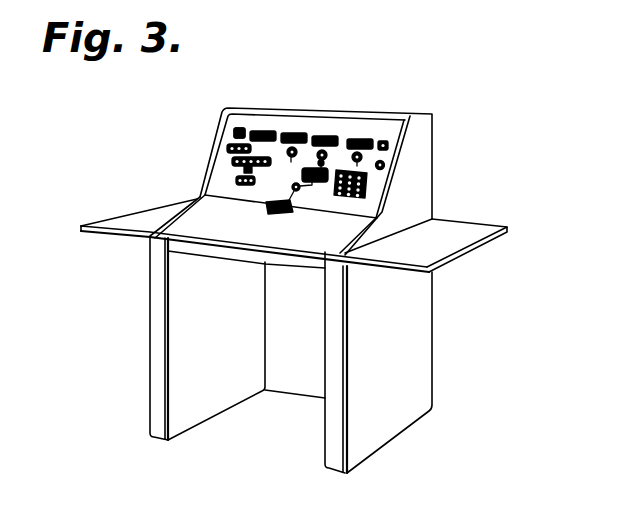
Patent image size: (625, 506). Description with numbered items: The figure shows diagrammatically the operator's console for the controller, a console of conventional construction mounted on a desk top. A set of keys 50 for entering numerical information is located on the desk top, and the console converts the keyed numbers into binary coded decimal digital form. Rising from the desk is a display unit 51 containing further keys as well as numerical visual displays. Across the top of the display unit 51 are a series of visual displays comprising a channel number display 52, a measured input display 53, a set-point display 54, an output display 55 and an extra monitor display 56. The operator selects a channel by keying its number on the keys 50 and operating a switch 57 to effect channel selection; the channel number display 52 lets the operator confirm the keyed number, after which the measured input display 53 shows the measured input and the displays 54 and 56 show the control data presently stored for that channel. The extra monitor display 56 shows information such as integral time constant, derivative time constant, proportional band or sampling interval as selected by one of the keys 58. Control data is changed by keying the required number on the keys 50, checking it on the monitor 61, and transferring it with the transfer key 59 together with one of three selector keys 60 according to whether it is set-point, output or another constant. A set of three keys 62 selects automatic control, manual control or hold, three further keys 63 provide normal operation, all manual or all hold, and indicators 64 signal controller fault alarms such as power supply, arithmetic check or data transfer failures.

The keys 50 is at (282, 214).
The display unit 51 is at (396, 121).
The channel number display 52 is at (237, 128).
The measured input display 53 is at (261, 130).
The set-point display 54 is at (292, 132).
The output display 55 is at (325, 137).
The extra monitor display 56 is at (362, 138).
The switch 57 is at (290, 153).
The keys 58 is at (367, 184).
The transfer key 59 is at (330, 165).
The selector keys 60 is at (318, 157).
The monitor 61 is at (320, 182).
The keys 62 is at (236, 132).
The keys 63 is at (236, 180).
The indicators 64 is at (231, 147).